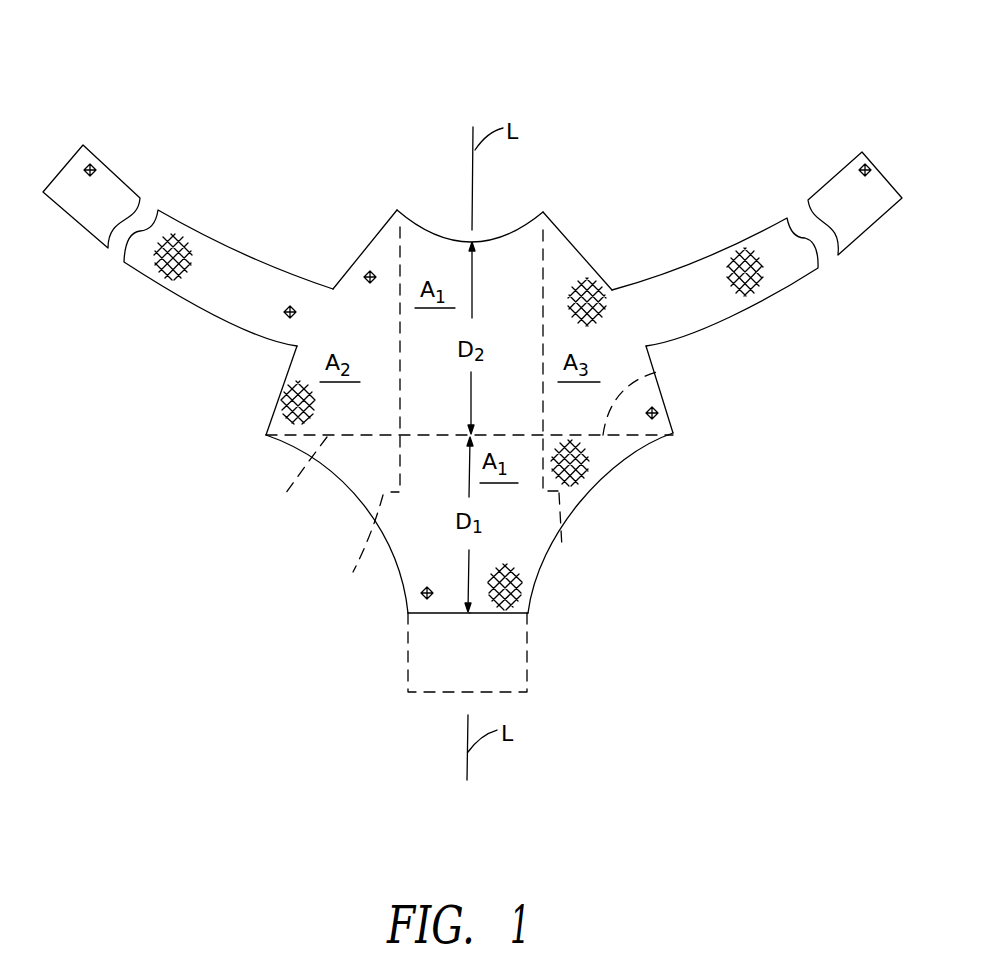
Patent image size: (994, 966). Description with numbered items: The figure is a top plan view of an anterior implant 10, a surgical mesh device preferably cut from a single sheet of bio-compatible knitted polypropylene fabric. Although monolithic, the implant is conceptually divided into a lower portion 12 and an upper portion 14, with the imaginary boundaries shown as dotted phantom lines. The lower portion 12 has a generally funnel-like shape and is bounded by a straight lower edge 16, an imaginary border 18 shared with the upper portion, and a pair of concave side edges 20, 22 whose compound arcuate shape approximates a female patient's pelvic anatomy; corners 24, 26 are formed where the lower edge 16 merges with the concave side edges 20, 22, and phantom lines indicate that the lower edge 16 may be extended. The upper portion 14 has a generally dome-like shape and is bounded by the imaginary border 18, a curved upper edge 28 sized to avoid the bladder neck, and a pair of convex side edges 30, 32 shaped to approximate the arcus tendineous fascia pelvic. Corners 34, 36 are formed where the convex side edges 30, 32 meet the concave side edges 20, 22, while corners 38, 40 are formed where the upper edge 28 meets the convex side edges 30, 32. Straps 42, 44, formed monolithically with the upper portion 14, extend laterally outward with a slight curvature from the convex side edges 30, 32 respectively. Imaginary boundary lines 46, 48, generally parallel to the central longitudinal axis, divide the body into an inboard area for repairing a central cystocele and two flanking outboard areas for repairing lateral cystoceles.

The anterior implant 10 is at (341, 126).
The lower portion 12 is at (636, 458).
The upper portion 14 is at (278, 380).
The lower edge 16 is at (442, 613).
The imaginary border 18 is at (280, 500).
The concave side edge 20 is at (352, 494).
The concave side edge 22 is at (593, 490).
The corner 24 is at (407, 613).
The corner 26 is at (530, 613).
The upper edge 28 is at (427, 228).
The convex side edge 30 is at (365, 247).
The convex side edge 32 is at (577, 237).
The corner 34 is at (266, 435).
The corner 36 is at (673, 430).
The corner 38 is at (397, 210).
The corner 40 is at (543, 212).
The strap 42 is at (166, 293).
The strap 44 is at (752, 310).
The imaginary boundary line 46 is at (353, 572).
The imaginary boundary line 48 is at (563, 548).